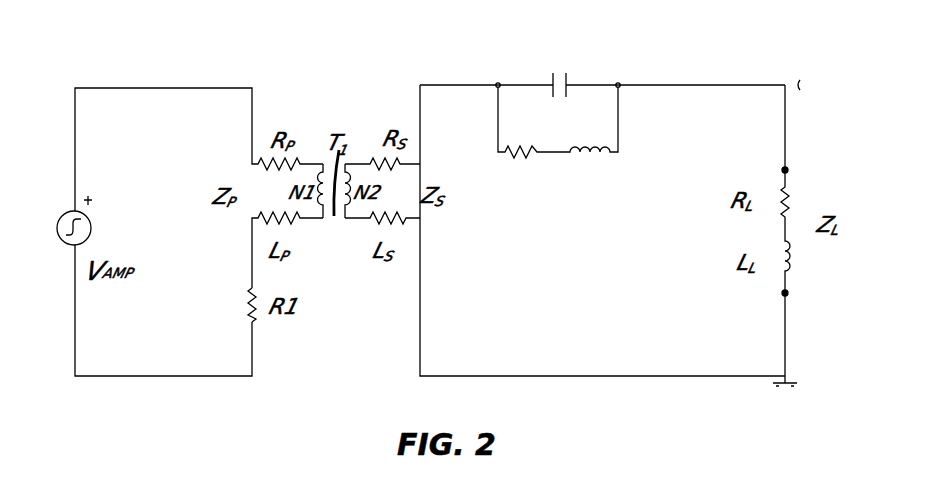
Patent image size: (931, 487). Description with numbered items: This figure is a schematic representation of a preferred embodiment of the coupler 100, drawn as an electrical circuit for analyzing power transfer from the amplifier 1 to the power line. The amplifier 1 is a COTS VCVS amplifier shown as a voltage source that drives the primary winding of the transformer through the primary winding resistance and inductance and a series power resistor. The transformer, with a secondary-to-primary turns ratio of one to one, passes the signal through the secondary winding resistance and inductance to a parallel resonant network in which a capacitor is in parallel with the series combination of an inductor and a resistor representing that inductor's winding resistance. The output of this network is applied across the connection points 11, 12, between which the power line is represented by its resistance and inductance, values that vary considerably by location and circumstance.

The coupler 100 is at (530, 32).
The connection point 11 is at (809, 162).
The connection point 12 is at (808, 293).
The amplifier 1 is at (61, 224).